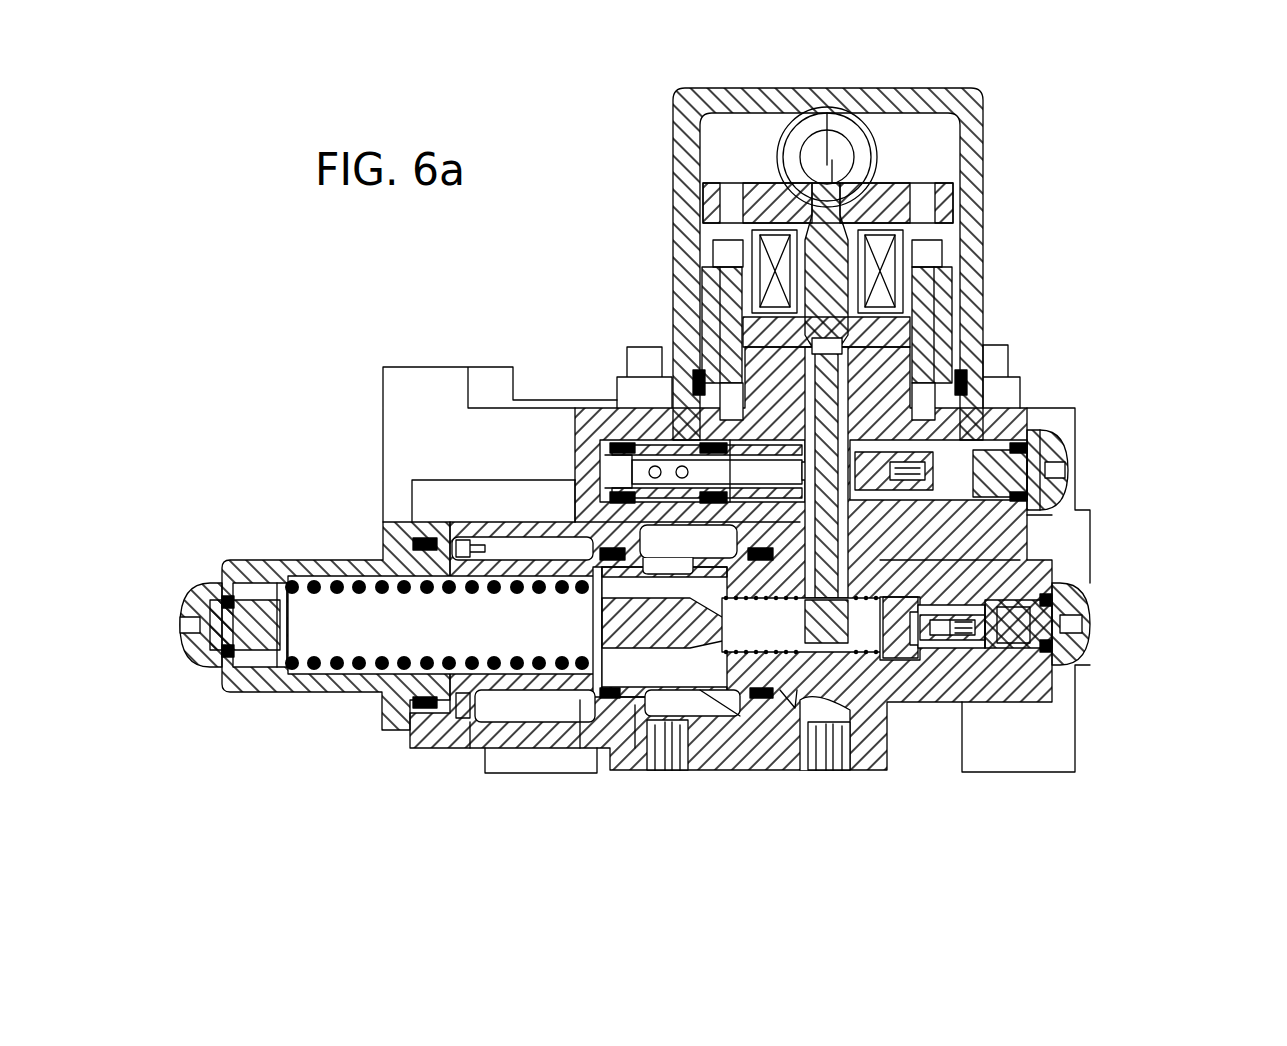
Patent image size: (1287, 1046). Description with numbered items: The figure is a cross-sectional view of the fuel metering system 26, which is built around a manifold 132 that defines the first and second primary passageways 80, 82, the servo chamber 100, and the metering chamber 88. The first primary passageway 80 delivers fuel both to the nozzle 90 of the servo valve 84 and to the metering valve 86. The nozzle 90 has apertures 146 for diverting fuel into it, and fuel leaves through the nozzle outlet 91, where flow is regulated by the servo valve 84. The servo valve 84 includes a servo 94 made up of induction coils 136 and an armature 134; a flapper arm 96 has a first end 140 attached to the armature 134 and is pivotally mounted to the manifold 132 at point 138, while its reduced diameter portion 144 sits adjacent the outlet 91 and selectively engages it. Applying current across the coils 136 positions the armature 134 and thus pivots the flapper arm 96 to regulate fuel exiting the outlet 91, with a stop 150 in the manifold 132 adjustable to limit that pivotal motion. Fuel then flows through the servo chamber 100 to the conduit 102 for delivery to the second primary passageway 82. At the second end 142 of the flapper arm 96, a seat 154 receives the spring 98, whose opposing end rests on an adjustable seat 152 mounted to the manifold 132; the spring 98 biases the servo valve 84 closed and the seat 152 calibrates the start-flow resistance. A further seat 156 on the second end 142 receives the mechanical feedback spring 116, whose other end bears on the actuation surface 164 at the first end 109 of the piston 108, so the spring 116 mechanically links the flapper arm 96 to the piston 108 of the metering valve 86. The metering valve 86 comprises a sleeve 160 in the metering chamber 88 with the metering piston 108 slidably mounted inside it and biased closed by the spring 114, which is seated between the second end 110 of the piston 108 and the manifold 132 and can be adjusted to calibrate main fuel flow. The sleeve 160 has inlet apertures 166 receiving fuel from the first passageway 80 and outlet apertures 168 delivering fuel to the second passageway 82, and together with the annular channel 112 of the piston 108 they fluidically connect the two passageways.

The fuel metering system 26 is at (1165, 738).
The first primary passageway 80 is at (697, 552).
The second primary passageway 82 is at (528, 717).
The servo valve 84 is at (890, 388).
The metering valve 86 is at (652, 738).
The metering chamber 88 is at (357, 643).
The nozzle 90 is at (658, 442).
The nozzle outlet 91 is at (732, 425).
The servo 94 is at (748, 152).
The flapper arm 96 is at (850, 432).
The spring 98 is at (970, 650).
The servo chamber 100 is at (782, 638).
The conduit 102 is at (833, 665).
The metering piston 108 is at (640, 700).
The first end of piston 109 is at (580, 512).
The second end of piston 110 is at (585, 700).
The annular channel 112 is at (648, 675).
The spring 114 is at (320, 578).
The mechanical feedback spring 116 is at (755, 700).
The manifold 132 is at (880, 540).
The armature 134 is at (838, 180).
The induction coils 136 is at (885, 240).
The pivot point 138 is at (882, 328).
The first end of flapper arm 140 is at (760, 232).
The second end of flapper arm 142 is at (895, 660).
The reduced diameter portion 144 is at (850, 450).
The apertures 146 is at (665, 445).
The stop 150 is at (880, 528).
The seat 152 is at (1000, 700).
The seat 154 is at (925, 650).
The seat 156 is at (790, 690).
The sleeve 160 is at (580, 556).
The actuation surface 164 is at (722, 706).
The inlet apertures 166 is at (590, 600).
The outlet apertures 168 is at (505, 772).